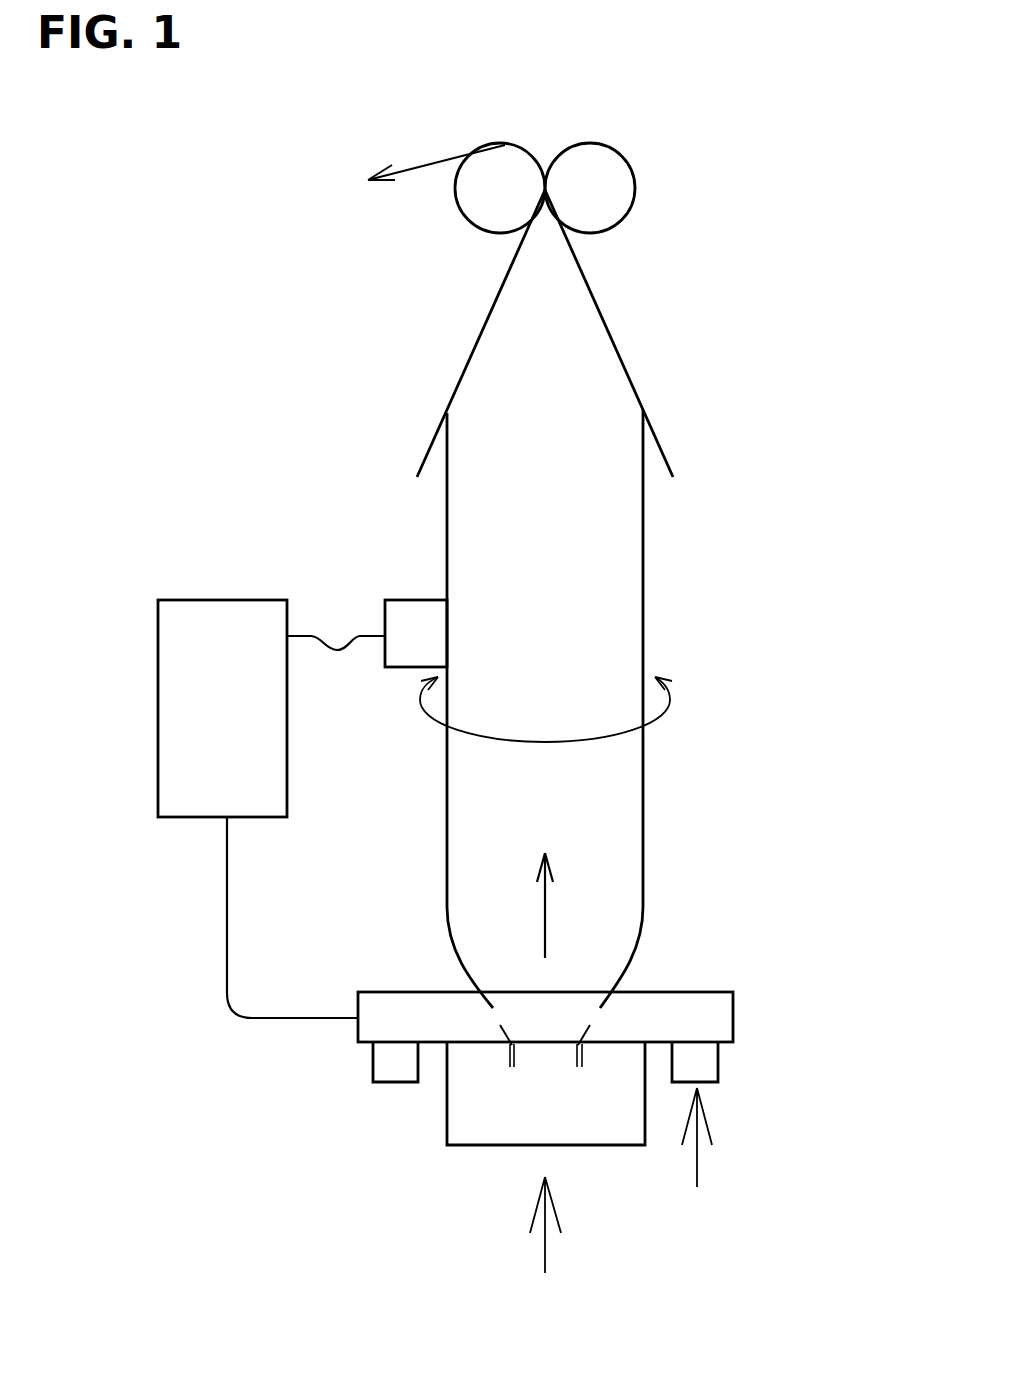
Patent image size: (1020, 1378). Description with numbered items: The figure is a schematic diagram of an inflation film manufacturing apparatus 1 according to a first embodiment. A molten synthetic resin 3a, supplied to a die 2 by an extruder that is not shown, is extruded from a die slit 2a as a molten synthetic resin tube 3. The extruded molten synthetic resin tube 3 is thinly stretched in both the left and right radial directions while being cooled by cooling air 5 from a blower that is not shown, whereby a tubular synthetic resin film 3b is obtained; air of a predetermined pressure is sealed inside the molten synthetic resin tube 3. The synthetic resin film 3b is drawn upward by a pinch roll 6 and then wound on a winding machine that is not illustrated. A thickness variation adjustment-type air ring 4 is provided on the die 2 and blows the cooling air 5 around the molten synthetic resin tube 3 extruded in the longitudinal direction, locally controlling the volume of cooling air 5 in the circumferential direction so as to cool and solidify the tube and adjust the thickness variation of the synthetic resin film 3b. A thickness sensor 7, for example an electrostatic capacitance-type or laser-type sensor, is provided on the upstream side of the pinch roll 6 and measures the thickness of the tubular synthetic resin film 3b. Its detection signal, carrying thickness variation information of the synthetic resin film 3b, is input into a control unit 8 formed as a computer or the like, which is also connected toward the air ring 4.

The inflation film manufacturing apparatus 1 is at (700, 530).
The die 2 is at (517, 1132).
The die slit 2a is at (508, 1060).
The molten synthetic resin tube 3 is at (600, 978).
The molten synthetic resin 3a is at (519, 1090).
The tubular synthetic resin film 3b is at (610, 776).
The thickness variation adjustment-type air ring 4 is at (732, 1015).
The cooling air 5 is at (694, 1161).
The pinch roll 6 is at (517, 172).
The thickness sensor 7 is at (413, 625).
The control unit 8 is at (198, 650).